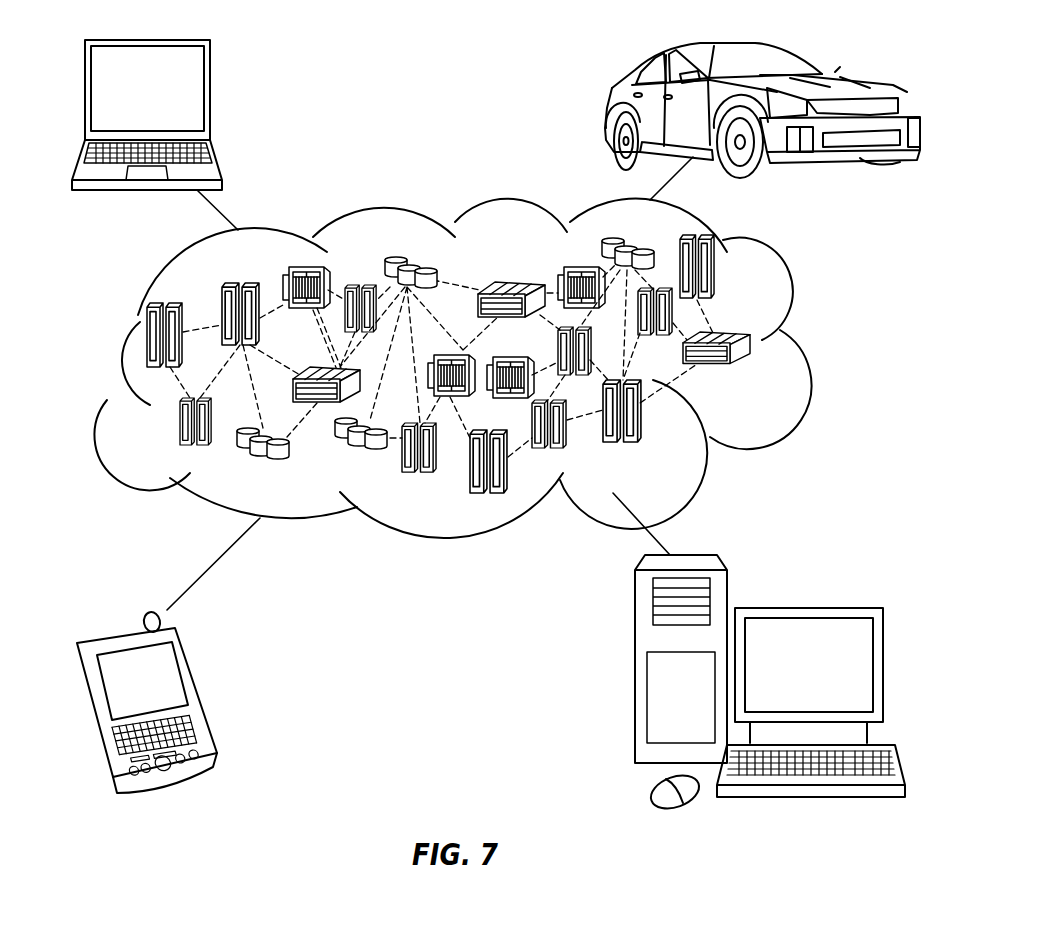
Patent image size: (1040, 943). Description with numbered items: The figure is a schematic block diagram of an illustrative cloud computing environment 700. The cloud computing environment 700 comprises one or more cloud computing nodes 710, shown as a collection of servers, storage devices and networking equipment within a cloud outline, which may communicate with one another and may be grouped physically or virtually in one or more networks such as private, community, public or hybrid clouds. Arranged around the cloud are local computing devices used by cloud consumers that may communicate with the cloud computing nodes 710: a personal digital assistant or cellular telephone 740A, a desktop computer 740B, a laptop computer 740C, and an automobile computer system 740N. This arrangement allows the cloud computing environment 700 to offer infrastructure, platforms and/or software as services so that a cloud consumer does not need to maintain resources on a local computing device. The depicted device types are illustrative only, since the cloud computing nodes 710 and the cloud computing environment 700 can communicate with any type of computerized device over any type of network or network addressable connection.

The cloud computing environment 700 is at (831, 338).
The cloud computing nodes 710 is at (758, 362).
The personal digital assistant or cellular telephone 740A is at (202, 692).
The desktop computer 740B is at (805, 607).
The laptop computer 740C is at (210, 98).
The automobile computer system 740N is at (606, 112).